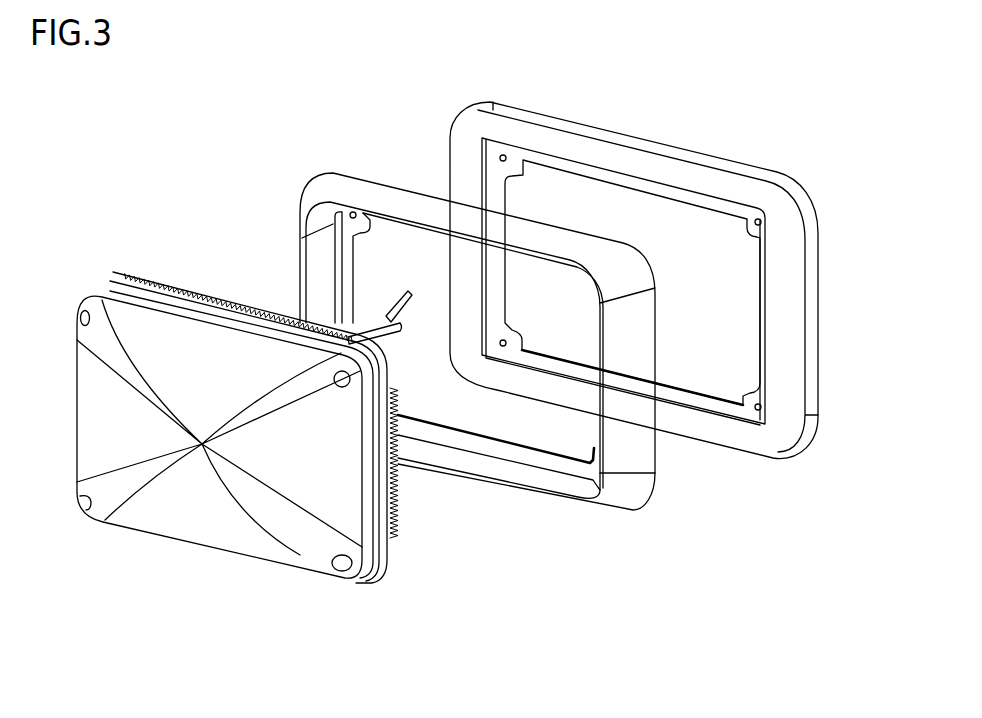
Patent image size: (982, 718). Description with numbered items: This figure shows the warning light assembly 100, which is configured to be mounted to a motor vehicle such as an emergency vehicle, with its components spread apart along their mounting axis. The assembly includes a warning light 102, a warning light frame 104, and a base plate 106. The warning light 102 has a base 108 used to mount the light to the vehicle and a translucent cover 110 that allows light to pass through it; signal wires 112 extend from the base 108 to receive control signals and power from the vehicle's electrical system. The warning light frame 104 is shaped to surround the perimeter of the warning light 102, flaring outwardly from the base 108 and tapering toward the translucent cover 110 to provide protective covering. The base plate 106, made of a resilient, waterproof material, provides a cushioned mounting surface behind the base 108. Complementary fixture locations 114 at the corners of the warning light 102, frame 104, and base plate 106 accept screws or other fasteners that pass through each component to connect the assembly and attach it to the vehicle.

The warning light assembly 100 is at (752, 577).
The warning light 102 is at (380, 561).
The warning light frame 104 is at (613, 502).
The base plate 106 is at (776, 458).
The base 108 is at (395, 543).
The translucent cover 110 is at (160, 518).
The signal wires 112 is at (400, 323).
The fixture locations 114 is at (500, 157).